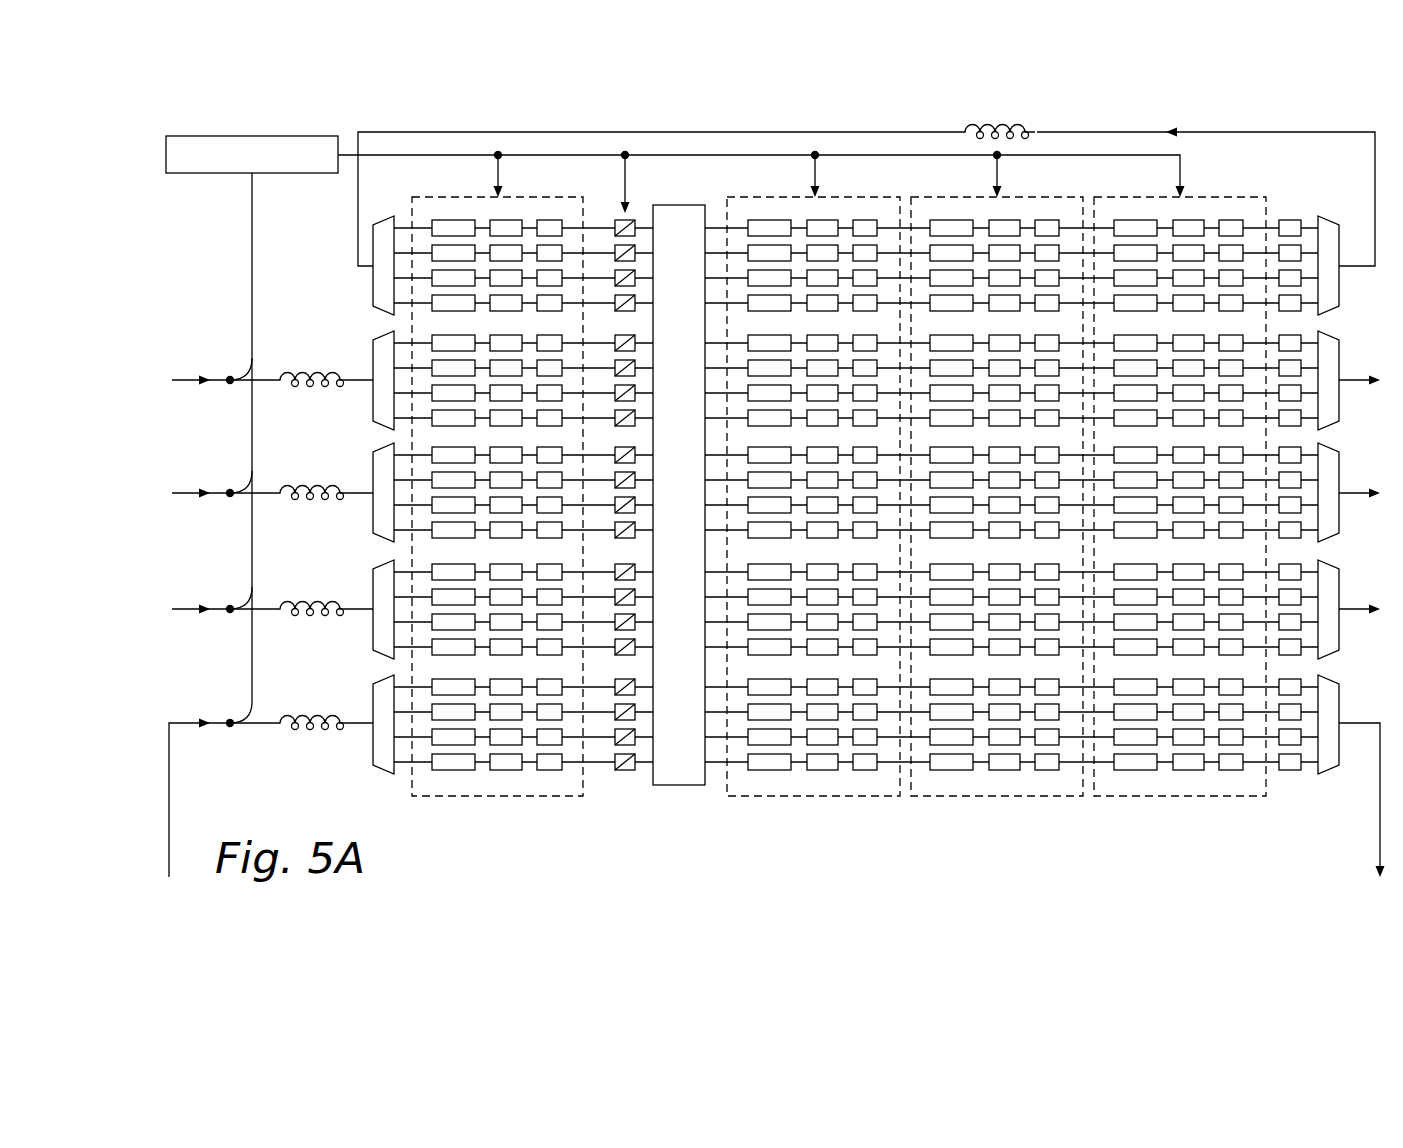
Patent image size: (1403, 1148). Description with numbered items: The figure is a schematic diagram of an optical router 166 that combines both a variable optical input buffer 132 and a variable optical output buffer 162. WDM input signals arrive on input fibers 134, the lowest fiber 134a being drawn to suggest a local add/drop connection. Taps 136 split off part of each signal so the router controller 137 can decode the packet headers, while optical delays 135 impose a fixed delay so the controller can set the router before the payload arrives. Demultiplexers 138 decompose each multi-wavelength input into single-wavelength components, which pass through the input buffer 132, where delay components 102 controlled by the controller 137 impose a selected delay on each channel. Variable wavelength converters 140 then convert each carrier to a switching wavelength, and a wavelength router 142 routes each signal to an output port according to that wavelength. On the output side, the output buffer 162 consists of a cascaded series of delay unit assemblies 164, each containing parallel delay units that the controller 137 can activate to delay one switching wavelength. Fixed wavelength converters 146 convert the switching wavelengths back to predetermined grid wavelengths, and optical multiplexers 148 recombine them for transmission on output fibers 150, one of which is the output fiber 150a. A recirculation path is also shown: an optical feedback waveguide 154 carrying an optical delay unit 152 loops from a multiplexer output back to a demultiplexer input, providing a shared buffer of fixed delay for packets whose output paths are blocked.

The delay components 102 is at (447, 771).
The variable multi-channel optical input buffer 132 is at (485, 797).
The input fibers 134 is at (184, 373).
The lowest fiber 134a is at (169, 809).
The optical delay 135 is at (312, 372).
The taps 136 is at (232, 388).
The router controller 137 is at (237, 173).
The demultiplexers 138 is at (380, 776).
The variable wavelength converters 140 is at (625, 771).
The wavelength router 142 is at (680, 785).
The fixed wavelength converters 146 is at (1288, 771).
The optical multiplexers 148 is at (1325, 775).
The output fiber 150 is at (1350, 378).
The output fiber 150a is at (1378, 845).
The optical delay unit 152 is at (1027, 122).
The optical feedback waveguide 154 is at (1290, 131).
The variable optical output buffer 162 is at (1015, 828).
The delay unit assemblies 164 is at (800, 797).
The optical router 166 is at (253, 113).